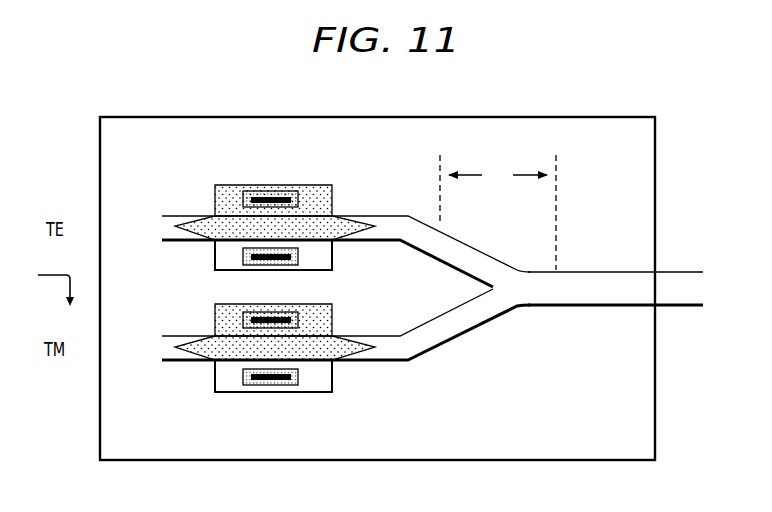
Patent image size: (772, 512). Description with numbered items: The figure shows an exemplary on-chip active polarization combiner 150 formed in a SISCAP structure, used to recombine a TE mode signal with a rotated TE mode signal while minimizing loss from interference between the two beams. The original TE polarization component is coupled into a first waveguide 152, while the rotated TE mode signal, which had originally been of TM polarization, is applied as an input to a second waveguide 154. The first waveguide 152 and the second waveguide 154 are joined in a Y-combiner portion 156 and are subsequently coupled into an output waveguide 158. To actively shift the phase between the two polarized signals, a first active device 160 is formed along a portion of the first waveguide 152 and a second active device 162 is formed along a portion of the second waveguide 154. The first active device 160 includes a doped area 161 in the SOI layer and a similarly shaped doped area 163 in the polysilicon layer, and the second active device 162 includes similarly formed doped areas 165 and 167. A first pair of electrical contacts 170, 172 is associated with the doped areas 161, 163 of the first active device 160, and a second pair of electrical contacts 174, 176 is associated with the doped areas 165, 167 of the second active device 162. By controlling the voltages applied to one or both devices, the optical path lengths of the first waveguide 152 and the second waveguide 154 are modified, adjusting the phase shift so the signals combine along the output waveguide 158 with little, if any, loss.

The on-chip active polarization combiner 150 is at (513, 361).
The first waveguide 152 is at (169, 225).
The second waveguide 154 is at (163, 362).
The Y-combiner portion 156 is at (498, 212).
The output waveguide 158 is at (679, 281).
The first active device 160 is at (276, 204).
The doped area 161 is at (333, 245).
The second active device 162 is at (272, 362).
The doped area 163 is at (231, 195).
The doped area 165 is at (333, 376).
The doped area 167 is at (226, 323).
The electrical contact 170 is at (247, 252).
The electrical contact 172 is at (273, 196).
The electrical contact 174 is at (270, 405).
The electrical contact 176 is at (268, 313).